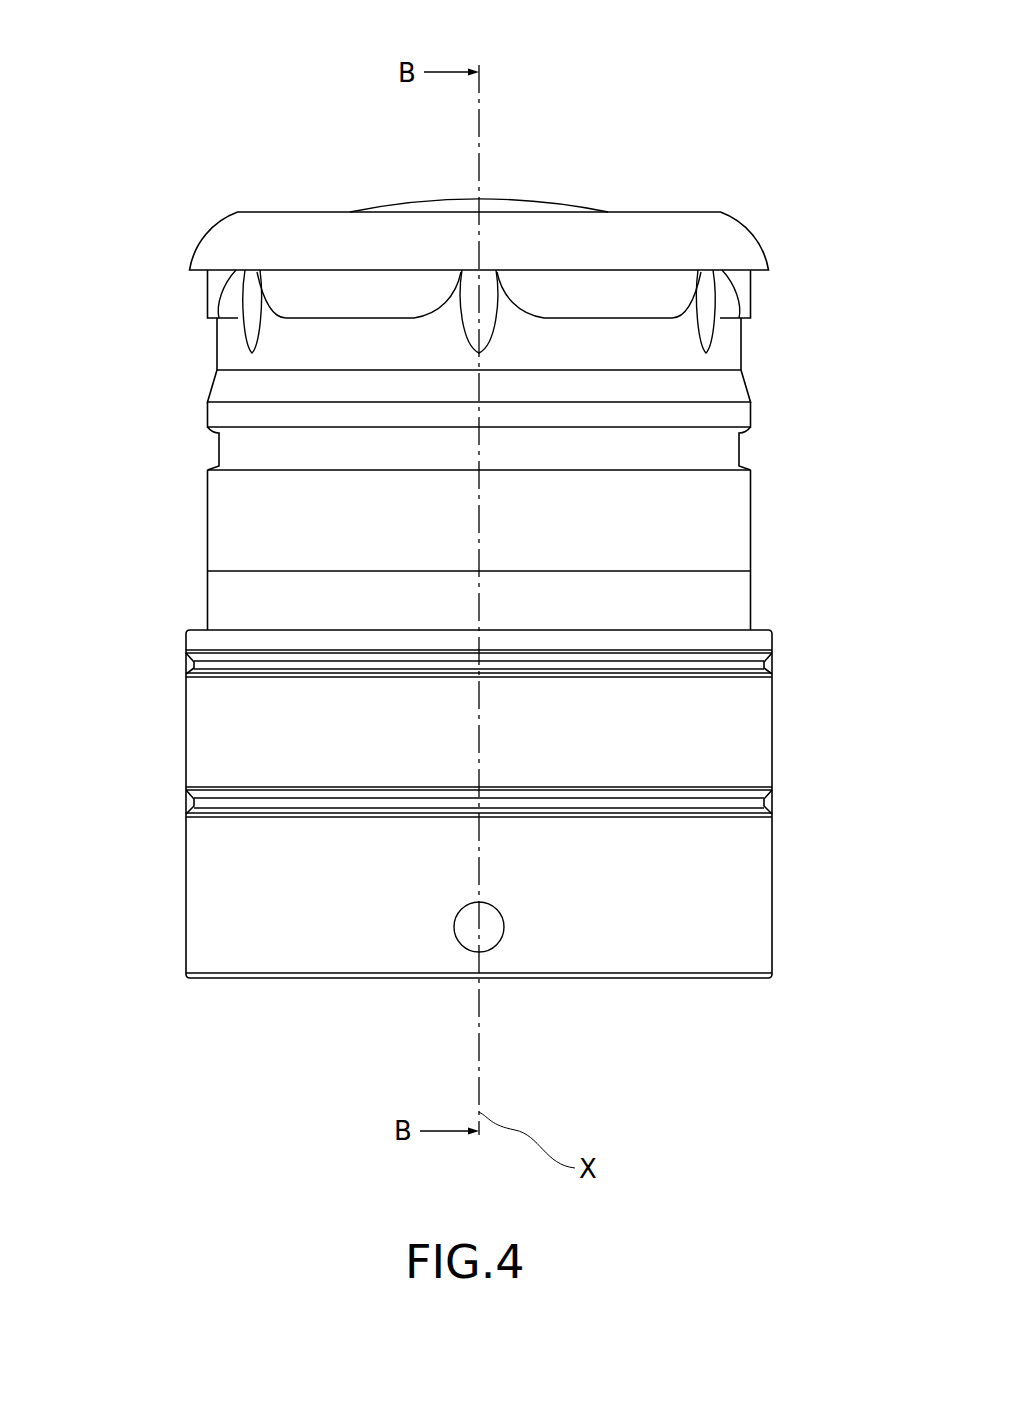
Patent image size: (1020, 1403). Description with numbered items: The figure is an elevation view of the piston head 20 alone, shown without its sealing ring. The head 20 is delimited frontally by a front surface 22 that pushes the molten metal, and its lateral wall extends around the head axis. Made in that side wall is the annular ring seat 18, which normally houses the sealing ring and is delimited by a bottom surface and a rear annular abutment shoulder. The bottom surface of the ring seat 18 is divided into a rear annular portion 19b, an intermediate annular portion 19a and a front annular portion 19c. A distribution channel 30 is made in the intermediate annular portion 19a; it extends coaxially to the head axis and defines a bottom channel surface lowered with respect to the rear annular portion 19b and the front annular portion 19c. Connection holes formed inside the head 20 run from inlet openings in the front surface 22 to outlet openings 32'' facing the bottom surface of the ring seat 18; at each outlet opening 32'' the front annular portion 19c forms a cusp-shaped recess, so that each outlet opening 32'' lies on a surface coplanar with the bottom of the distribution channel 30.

The ring seat 18 is at (470, 359).
The intermediate annular portion 19a is at (470, 279).
The rear annular portion 19b is at (243, 543).
The front annular portion 19c is at (666, 290).
The head 20 is at (811, 604).
The front surface 22 is at (552, 196).
The distribution channel 30 is at (238, 353).
The outlet opening 32'' is at (335, 232).